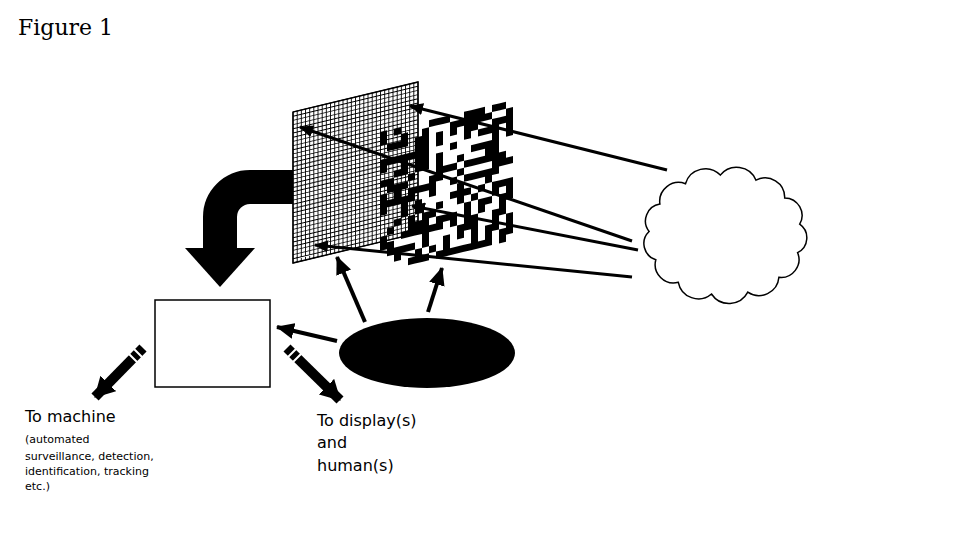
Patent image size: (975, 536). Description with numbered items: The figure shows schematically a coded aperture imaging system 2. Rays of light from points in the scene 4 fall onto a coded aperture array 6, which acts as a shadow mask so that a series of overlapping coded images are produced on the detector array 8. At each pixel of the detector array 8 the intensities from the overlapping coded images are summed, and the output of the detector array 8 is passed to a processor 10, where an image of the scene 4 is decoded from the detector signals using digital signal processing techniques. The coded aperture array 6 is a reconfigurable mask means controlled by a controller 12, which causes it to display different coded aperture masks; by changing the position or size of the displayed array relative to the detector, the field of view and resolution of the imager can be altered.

The coded aperture imaging system 2 is at (560, 98).
The scene 4 is at (725, 235).
The coded aperture array 6 is at (514, 163).
The detector array 8 is at (318, 108).
The processor 10 is at (167, 318).
The controller 12 is at (497, 362).